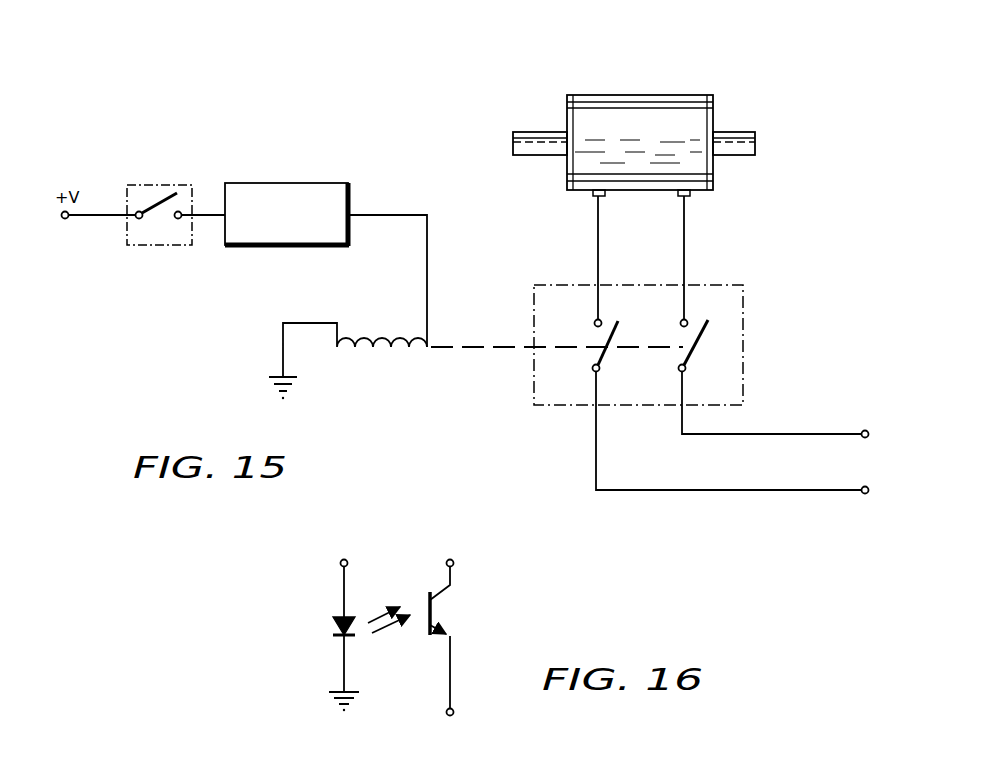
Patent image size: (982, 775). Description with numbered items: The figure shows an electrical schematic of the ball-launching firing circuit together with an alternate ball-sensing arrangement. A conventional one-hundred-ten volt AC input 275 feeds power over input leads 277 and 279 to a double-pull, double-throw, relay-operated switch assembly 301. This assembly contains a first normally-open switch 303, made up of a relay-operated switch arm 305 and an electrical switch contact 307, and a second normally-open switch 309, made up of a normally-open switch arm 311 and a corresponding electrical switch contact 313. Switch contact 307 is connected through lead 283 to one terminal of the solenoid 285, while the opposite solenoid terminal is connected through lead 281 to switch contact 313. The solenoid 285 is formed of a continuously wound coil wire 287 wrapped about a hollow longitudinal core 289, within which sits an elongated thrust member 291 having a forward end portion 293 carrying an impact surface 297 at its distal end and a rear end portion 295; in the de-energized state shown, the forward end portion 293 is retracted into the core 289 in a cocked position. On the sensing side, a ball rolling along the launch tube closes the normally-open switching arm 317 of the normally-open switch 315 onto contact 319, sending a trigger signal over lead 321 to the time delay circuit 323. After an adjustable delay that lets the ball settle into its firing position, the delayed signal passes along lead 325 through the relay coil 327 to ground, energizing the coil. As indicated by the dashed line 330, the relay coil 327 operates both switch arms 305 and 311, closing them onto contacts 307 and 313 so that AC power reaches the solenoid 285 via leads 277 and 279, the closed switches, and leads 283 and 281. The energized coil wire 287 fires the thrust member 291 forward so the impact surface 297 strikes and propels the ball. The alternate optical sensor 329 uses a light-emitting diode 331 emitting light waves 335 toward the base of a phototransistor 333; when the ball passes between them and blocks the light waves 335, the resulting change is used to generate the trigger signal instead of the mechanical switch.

In FIG. 15, the 110V AC input 275 is at (882, 436).
In FIG. 15, the input lead 277 is at (812, 434).
In FIG. 15, the input lead 279 is at (780, 492).
In FIG. 15, the lead 281 is at (597, 242).
In FIG. 15, the lead 283 is at (686, 262).
In FIG. 15, the solenoid 285 is at (654, 146).
In FIG. 15, the coil wire 287 is at (653, 190).
In FIG. 15, the hollow longitudinal core 289 is at (718, 118).
In FIG. 15, the thrust member 291 is at (573, 158).
In FIG. 15, the forward end portion 293 is at (740, 157).
In FIG. 15, the rear end portion 295 is at (526, 132).
In FIG. 15, the impact surface 297 is at (756, 146).
In FIG. 15, the double-pull, double-throw relay-operated switch assembly 301 is at (647, 339).
In FIG. 15, the first normally-open switch 303 is at (732, 306).
In FIG. 15, the relay-operated switch arm 305 is at (702, 330).
In FIG. 15, the electrical switch contact 307 is at (688, 321).
In FIG. 15, the second normally-open switch 309 is at (582, 364).
In FIG. 15, the normally-open switch arm 311 is at (622, 328).
In FIG. 15, the electrical switch contact 313 is at (594, 322).
In FIG. 15, the normally-open switch 315 is at (148, 215).
In FIG. 15, the switching arm 317 is at (156, 188).
In FIG. 15, the contact 319 is at (182, 210).
In FIG. 15, the lead 321 is at (207, 218).
In FIG. 15, the time delay circuit 323 is at (335, 183).
In FIG. 15, the lead 325 is at (427, 265).
In FIG. 15, the relay coil 327 is at (378, 357).
In FIG. 16, the optical sensor 329 is at (386, 615).
In FIG. 15, the dashed line 330 is at (470, 347).
In FIG. 16, the light-emitting diode 331 is at (338, 640).
In FIG. 16, the phototransistor 333 is at (432, 628).
In FIG. 16, the light waves 335 is at (378, 615).